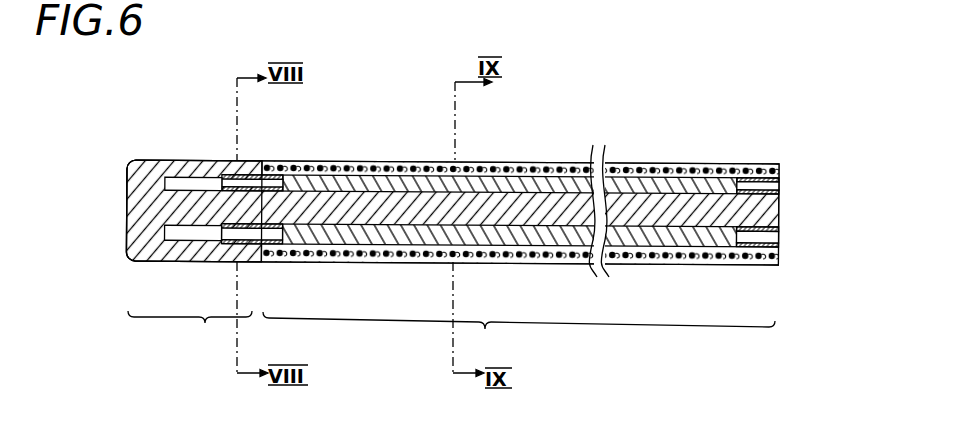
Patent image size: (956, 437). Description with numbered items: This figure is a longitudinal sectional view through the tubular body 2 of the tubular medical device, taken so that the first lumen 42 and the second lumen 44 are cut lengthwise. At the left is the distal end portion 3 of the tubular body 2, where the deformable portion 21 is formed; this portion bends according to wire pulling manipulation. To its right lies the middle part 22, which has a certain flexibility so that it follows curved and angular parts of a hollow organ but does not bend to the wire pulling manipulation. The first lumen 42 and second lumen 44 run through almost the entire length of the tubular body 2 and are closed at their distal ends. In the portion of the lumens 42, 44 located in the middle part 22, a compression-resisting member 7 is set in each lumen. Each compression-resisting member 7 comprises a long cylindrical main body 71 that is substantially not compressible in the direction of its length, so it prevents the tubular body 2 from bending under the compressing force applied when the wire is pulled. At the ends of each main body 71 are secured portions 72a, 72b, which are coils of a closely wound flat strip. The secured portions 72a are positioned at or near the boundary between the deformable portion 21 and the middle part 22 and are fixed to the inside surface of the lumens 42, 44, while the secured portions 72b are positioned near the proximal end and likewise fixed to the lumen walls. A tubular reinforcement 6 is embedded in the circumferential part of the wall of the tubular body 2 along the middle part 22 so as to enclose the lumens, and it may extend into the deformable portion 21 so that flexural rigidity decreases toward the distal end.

The tubular body 2 is at (624, 164).
The distal end portion 3 is at (252, 158).
The tubular reinforcement 6 is at (512, 161).
The compression-resisting member 7 is at (664, 188).
The main body 71 is at (415, 234).
The secured portion 72a is at (263, 159).
The secured portion 72b is at (780, 184).
The first lumen 42 is at (181, 182).
The second lumen 44 is at (190, 235).
The deformable portion 21 is at (190, 336).
The middle part 22 is at (519, 337).